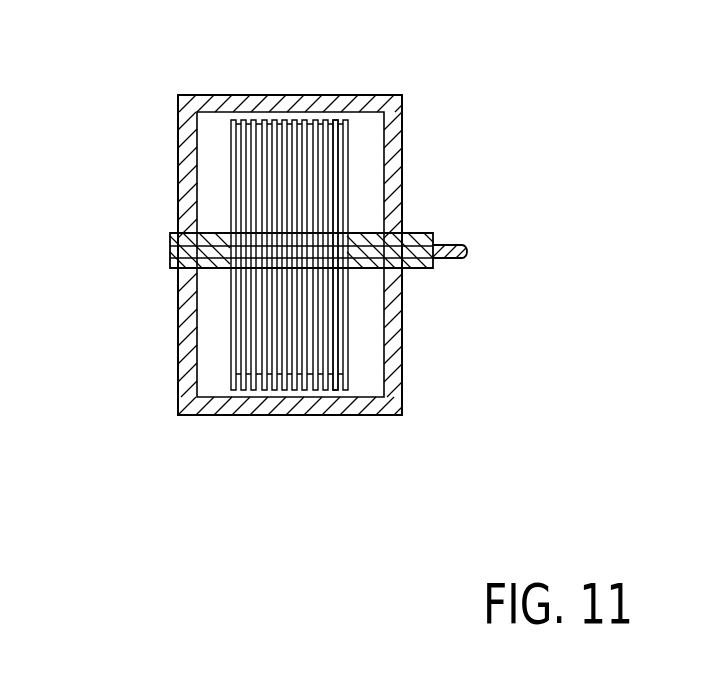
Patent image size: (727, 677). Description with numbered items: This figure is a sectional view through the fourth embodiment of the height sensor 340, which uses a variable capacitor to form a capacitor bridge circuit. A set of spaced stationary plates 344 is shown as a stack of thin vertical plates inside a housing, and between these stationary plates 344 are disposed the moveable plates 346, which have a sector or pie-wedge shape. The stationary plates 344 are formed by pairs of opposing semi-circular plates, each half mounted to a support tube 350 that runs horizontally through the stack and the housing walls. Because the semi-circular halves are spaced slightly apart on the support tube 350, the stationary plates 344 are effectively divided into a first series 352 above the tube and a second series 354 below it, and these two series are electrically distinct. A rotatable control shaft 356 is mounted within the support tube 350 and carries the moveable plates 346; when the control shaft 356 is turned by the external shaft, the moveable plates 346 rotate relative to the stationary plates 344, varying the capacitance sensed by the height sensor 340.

The height sensor 340 is at (367, 95).
The stationary plates 344 is at (347, 383).
The moveable plates 346 is at (338, 380).
The support tube 350 is at (425, 270).
The first series 352 is at (160, 113).
The second series 354 is at (162, 280).
The control shaft 356 is at (437, 245).